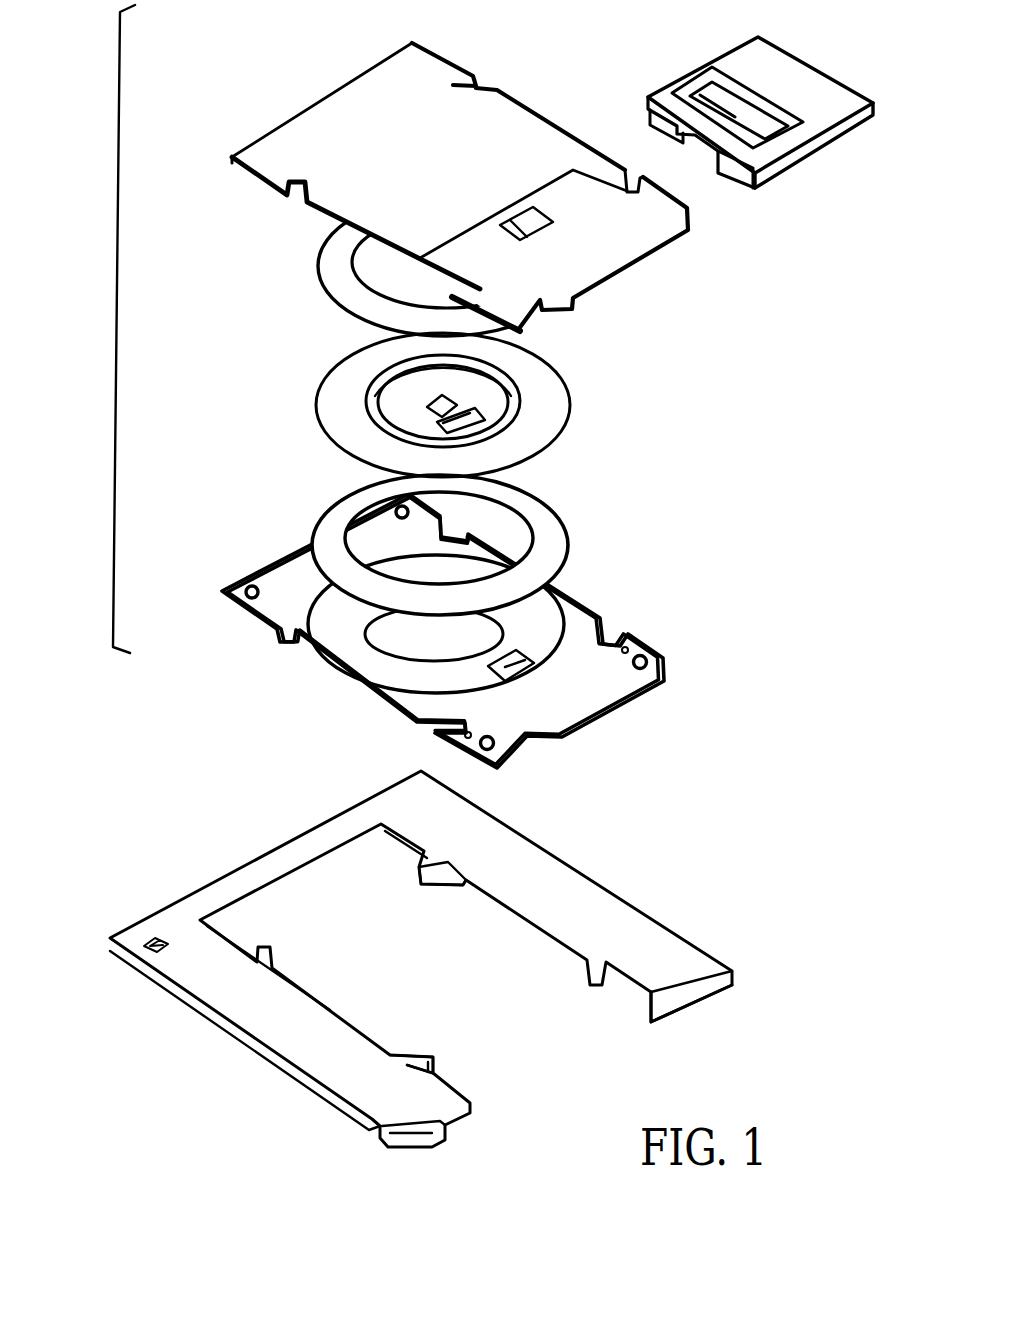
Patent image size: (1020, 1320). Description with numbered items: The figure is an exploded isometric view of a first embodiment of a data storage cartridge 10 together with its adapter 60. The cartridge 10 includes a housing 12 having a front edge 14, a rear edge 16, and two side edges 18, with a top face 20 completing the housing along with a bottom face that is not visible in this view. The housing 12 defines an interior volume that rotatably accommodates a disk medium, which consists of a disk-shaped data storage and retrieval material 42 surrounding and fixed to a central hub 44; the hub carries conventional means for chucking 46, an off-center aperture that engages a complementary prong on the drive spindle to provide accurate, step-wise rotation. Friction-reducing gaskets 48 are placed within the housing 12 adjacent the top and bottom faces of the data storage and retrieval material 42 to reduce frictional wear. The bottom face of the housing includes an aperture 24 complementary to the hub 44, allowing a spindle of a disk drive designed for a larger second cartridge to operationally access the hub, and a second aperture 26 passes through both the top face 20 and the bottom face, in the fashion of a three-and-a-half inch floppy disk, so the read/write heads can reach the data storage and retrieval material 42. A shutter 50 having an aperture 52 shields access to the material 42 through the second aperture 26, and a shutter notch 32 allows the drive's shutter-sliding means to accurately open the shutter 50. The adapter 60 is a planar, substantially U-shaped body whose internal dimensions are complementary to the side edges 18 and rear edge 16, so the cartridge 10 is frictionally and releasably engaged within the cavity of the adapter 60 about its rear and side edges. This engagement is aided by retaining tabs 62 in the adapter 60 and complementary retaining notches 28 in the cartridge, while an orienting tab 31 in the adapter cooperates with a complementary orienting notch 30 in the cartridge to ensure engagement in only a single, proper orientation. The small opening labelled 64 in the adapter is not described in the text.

The data storage cartridge 10 is at (112, 330).
The housing 12 is at (228, 156).
The front edge 14 is at (620, 275).
The rear edge 16 is at (340, 82).
The side edges 18 is at (517, 98).
The top face 20 is at (378, 172).
The aperture 24 is at (425, 633).
The second aperture 26 is at (553, 220).
The retaining notches 28 is at (297, 204).
The orienting notch 30 is at (668, 672).
The orienting tab 31 is at (653, 1011).
The shutter notch 32 is at (557, 308).
The data storage and retrieval material 42 is at (572, 382).
The central hub 44 is at (367, 392).
The means for chucking 46 is at (487, 422).
The friction-reducing gaskets 48 is at (343, 312).
The shutter 50 is at (813, 163).
The aperture 52 is at (683, 82).
The adapter 60 is at (224, 872).
The retaining tabs 62 is at (430, 886).
The aperture 64 is at (148, 944).